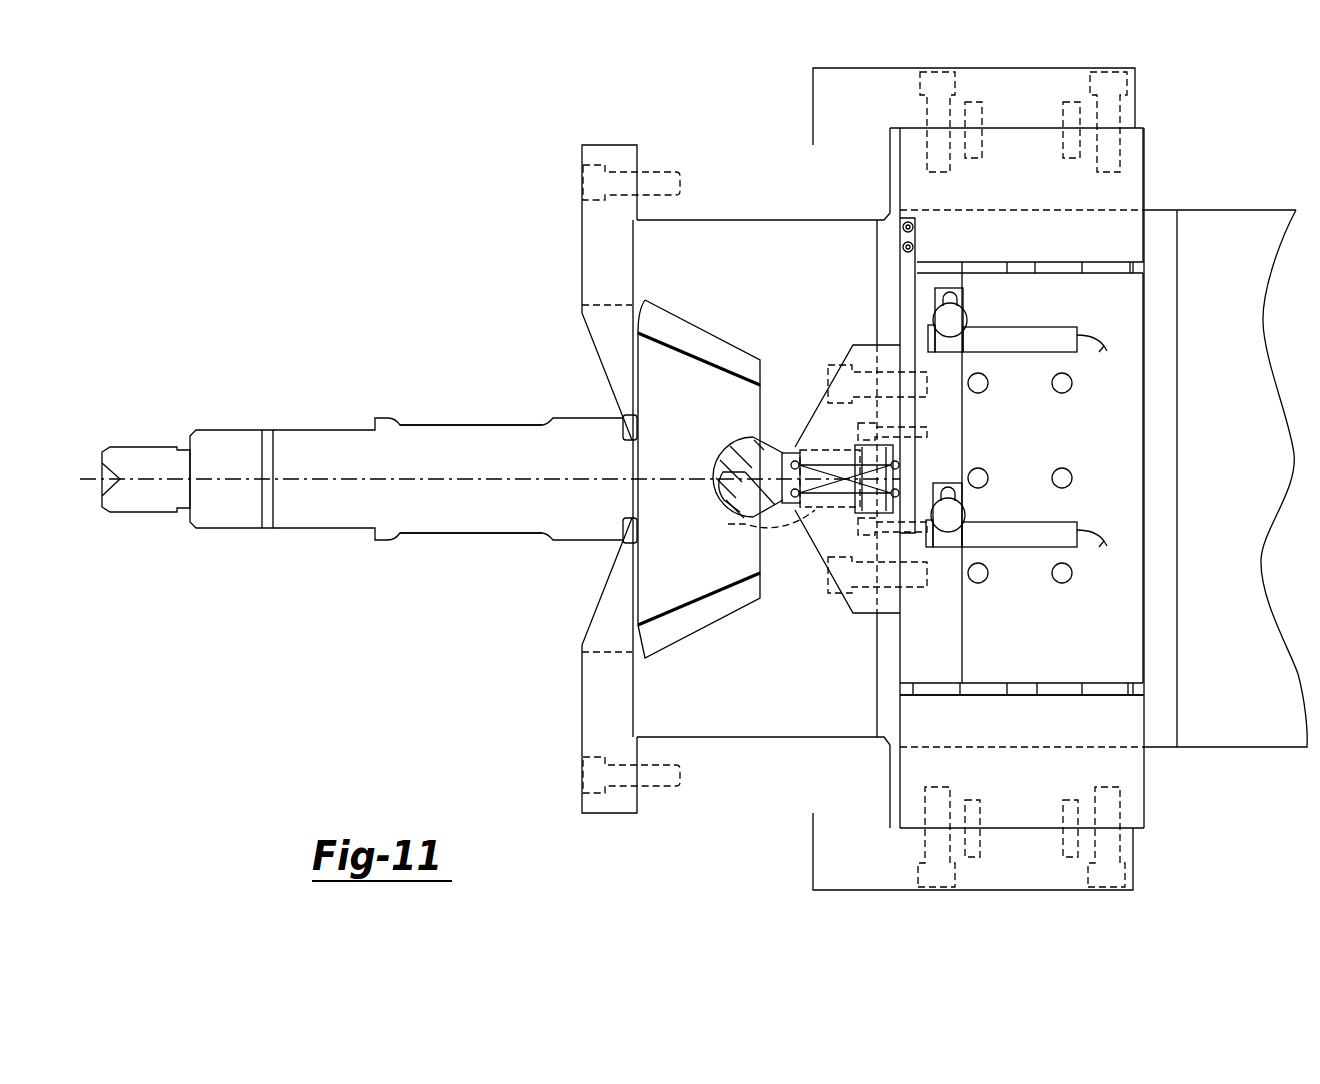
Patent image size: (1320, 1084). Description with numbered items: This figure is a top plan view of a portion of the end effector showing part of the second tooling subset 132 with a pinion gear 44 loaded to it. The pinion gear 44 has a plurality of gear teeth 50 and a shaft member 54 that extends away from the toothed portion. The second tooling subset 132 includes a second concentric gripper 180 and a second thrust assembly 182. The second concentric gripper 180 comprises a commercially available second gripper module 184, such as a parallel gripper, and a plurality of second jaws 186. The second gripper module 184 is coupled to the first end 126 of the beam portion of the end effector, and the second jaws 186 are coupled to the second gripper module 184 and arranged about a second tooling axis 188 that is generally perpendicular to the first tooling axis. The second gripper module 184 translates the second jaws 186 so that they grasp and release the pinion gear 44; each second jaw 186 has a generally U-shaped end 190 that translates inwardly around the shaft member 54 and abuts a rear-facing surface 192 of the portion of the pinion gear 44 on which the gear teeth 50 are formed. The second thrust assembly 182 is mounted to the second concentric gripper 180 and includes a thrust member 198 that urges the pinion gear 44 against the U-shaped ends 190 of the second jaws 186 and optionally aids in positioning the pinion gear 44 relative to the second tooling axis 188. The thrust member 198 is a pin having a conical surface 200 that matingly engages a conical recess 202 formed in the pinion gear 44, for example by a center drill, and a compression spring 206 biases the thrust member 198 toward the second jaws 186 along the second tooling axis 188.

The pinion gear 44 is at (354, 518).
The gear teeth 50 is at (700, 618).
The shaft member 54 is at (478, 443).
The first end 126 is at (1165, 258).
The second tooling subset 132 is at (1103, 378).
The second concentric gripper 180 is at (1102, 723).
The second thrust assembly 182 is at (820, 528).
The second gripper module 184 is at (1120, 465).
The second jaws 186 is at (755, 168).
The second tooling axis 188 is at (450, 482).
The U-shaped end 190 is at (604, 318).
The rear-facing surface 192 is at (630, 484).
The thrust member 198 is at (788, 447).
The conical surface 200 is at (777, 462).
The conical recess 202 is at (735, 473).
The compression spring 206 is at (780, 520).